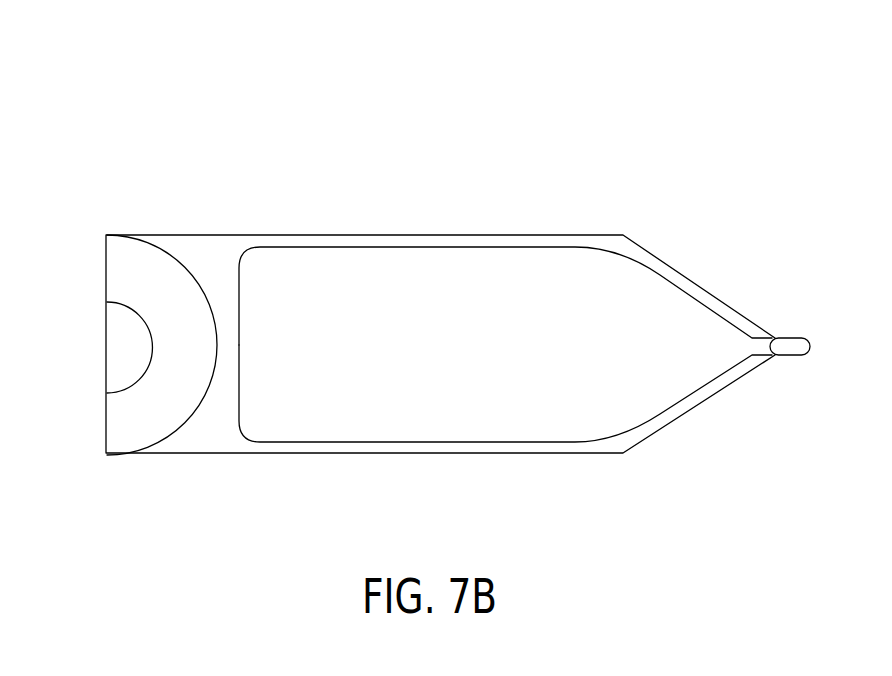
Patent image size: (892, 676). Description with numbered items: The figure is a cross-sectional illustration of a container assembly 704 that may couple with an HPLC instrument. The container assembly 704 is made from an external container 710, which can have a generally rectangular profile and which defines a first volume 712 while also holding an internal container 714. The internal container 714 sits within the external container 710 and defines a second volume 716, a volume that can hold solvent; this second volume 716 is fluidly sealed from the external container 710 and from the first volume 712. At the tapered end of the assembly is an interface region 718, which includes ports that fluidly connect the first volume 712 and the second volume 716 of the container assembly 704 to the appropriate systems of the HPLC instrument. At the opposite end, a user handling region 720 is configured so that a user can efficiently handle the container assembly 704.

The container assembly 704 is at (420, 75).
The external container 710 is at (322, 234).
The first volume 712 is at (222, 436).
The internal container 714 is at (497, 248).
The second volume 716 is at (387, 428).
The interface region 718 is at (790, 338).
The user handling region 720 is at (106, 347).